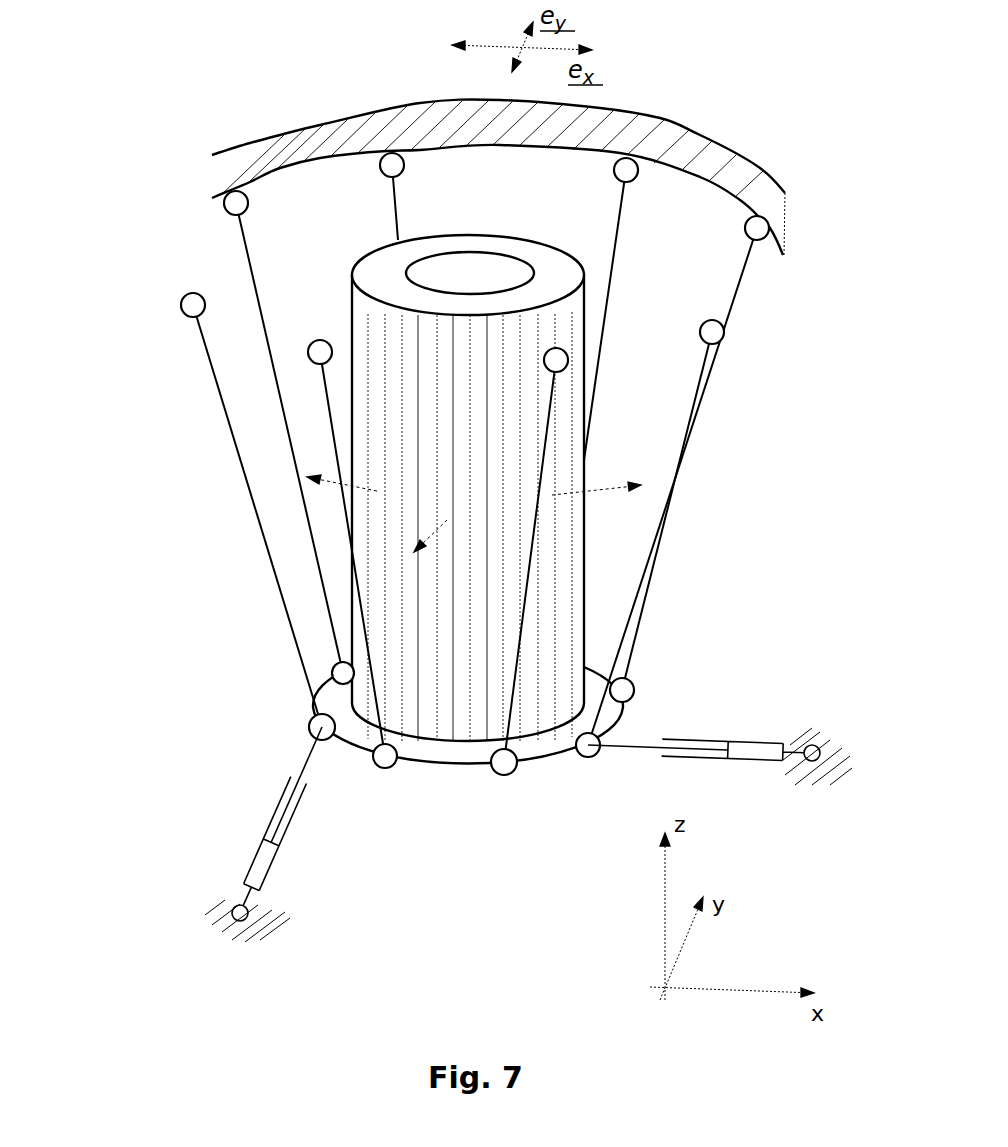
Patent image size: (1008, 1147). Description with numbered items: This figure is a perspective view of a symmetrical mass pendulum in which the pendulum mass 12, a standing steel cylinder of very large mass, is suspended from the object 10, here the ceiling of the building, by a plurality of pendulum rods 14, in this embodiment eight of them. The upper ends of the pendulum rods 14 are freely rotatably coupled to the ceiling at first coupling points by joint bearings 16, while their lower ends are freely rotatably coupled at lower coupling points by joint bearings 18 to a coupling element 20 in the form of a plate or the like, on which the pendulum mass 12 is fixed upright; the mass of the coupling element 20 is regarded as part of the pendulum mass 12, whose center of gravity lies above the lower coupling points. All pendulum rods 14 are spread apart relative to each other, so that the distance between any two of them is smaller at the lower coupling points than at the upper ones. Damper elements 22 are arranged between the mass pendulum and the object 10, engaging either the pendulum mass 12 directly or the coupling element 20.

The object 10 is at (750, 150).
The pendulum mass 12 is at (389, 266).
The pendulum rods 14 is at (255, 514).
The joint bearings 16 is at (180, 312).
The joint bearings 18 is at (307, 732).
The coupling element 20 is at (466, 767).
The damper elements 22 is at (725, 735).